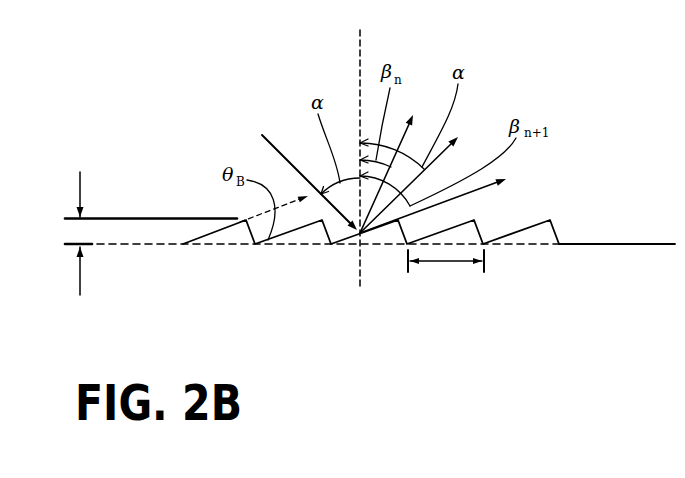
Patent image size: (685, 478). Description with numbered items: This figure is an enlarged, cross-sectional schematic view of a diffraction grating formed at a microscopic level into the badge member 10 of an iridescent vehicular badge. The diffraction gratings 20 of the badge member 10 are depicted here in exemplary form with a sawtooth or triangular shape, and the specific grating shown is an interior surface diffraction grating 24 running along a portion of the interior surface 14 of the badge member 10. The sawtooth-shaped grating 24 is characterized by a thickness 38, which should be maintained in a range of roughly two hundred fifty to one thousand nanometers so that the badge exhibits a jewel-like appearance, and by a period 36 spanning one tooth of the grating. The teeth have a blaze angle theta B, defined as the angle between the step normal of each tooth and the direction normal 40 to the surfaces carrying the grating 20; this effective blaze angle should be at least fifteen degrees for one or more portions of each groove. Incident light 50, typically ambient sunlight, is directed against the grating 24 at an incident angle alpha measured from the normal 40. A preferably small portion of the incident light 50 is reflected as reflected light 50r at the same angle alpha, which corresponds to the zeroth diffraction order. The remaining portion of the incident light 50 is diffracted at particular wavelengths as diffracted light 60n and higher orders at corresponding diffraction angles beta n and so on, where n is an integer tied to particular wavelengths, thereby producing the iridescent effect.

The badge member 10 is at (655, 193).
The interior surface 14 is at (595, 247).
The diffraction gratings 20 is at (574, 96).
The interior surface diffraction grating 24 is at (558, 300).
The period 36 is at (430, 263).
The thickness 38 is at (80, 192).
The direction normal 40 is at (360, 58).
The incident light 50 is at (302, 170).
The reflected light 50r is at (426, 172).
The diffracted light 60n is at (400, 162).